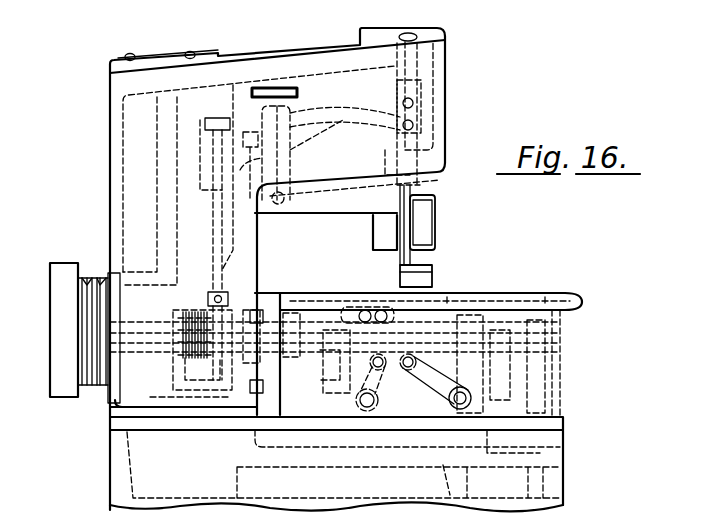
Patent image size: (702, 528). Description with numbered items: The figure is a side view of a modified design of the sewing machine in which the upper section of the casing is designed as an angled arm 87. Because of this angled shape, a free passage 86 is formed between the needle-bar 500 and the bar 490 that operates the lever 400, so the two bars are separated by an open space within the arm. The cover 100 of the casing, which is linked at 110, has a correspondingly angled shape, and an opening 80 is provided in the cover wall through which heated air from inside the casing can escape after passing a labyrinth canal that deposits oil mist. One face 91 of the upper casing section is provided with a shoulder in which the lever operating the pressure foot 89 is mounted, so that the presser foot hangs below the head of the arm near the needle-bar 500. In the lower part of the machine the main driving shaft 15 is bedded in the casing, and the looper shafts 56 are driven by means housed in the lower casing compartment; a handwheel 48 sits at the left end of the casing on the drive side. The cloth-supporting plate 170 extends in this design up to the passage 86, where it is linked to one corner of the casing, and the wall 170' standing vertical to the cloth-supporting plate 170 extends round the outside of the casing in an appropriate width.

The cover 100 is at (128, 86).
The opening 80 is at (257, 90).
The lever 400 is at (348, 118).
The face of the upper casing section 91 is at (445, 90).
The needle-bar 500 is at (413, 188).
The angled arm 87 is at (442, 203).
The pressure foot 89 is at (427, 280).
The cloth-supporting plate 170 is at (420, 280).
The wall 170' is at (541, 362).
The free passage 86 is at (326, 306).
The bar 490 is at (218, 230).
The main driving shaft 15 is at (155, 320).
The handwheel 48 is at (65, 380).
The link of the cover 110 is at (110, 408).
The looper shafts 56 is at (455, 405).